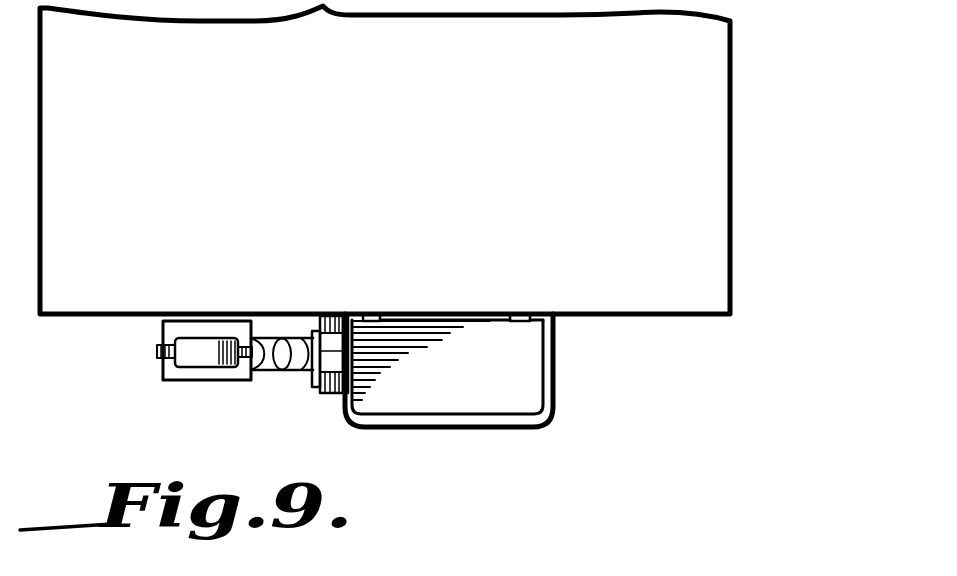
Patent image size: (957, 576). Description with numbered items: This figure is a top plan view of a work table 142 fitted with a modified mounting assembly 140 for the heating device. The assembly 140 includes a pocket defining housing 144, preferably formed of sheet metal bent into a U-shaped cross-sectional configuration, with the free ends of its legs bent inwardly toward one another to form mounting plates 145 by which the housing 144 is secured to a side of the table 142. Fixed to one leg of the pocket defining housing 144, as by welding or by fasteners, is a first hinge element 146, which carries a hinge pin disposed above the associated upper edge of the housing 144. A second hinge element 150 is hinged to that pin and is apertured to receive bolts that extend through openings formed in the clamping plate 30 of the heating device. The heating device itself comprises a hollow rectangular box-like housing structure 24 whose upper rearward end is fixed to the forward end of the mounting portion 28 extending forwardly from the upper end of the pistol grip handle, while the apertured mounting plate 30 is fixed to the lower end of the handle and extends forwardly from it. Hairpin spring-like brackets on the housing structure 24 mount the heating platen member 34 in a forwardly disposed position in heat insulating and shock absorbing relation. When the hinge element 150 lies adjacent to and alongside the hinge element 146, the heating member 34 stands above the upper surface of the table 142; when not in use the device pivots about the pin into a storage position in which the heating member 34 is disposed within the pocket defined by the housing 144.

The work table 142 is at (712, 201).
The housing structure 24 is at (238, 377).
The heating platen member 34 is at (198, 358).
The mounting portion 28 is at (285, 379).
The mounting plate 30 is at (312, 330).
The hinge element 150 is at (333, 330).
The first hinge element 146 is at (345, 314).
The pocket defining housing 144 is at (534, 427).
The mounting plates 145 is at (529, 313).
The mounting assembly 140 is at (558, 340).